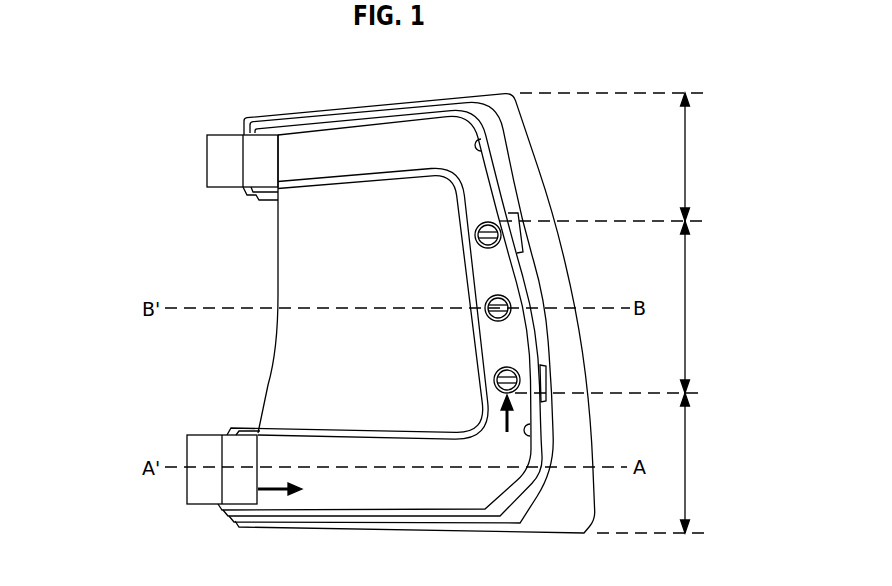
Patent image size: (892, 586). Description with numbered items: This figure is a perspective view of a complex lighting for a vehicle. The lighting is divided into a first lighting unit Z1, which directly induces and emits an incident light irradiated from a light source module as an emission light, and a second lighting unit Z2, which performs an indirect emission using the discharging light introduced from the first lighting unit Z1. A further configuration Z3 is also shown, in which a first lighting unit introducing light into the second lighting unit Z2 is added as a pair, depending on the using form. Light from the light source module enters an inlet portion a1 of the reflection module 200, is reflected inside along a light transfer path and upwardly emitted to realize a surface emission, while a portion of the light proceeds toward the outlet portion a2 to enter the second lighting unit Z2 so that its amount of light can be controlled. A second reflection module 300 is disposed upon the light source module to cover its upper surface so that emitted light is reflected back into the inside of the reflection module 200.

The second reflection module 300 is at (200, 505).
The reflection module 200 is at (277, 510).
The inlet portion a1 is at (291, 490).
The outlet portion a2 is at (506, 427).
The first lighting unit Z1 is at (659, 463).
The second lighting unit Z2 is at (618, 307).
The configuration with paired first lighting unit Z3 is at (611, 157).